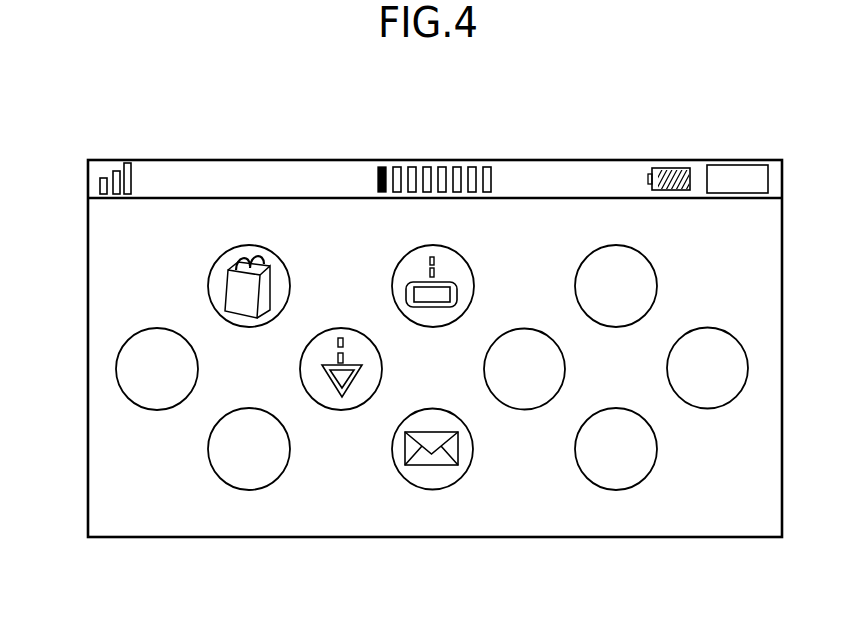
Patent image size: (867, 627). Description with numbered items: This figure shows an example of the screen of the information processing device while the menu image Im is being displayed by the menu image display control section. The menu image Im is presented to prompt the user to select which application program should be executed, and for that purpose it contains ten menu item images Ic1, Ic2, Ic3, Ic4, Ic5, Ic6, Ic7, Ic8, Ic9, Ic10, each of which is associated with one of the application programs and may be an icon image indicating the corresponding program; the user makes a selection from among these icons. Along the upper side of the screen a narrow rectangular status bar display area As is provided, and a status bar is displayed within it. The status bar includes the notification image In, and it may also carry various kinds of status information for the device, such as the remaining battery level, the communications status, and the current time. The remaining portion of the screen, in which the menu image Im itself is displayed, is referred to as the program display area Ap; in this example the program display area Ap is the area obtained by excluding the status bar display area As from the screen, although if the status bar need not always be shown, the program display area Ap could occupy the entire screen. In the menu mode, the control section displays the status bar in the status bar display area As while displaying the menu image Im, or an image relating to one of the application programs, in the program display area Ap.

The menu image Im is at (128, 528).
The status bar display area As is at (400, 152).
The program display area Ap is at (72, 200).
The notification image In is at (731, 165).
The menu item image Ic1 is at (249, 327).
The menu item image Ic2 is at (433, 327).
The menu item image Ic3 is at (616, 327).
The menu item image Ic4 is at (157, 410).
The menu item image Ic5 is at (341, 410).
The menu item image Ic6 is at (524, 410).
The menu item image Ic7 is at (707, 409).
The menu item image Ic8 is at (223, 482).
The menu item image Ic9 is at (405, 480).
The menu item image Ic10 is at (590, 482).